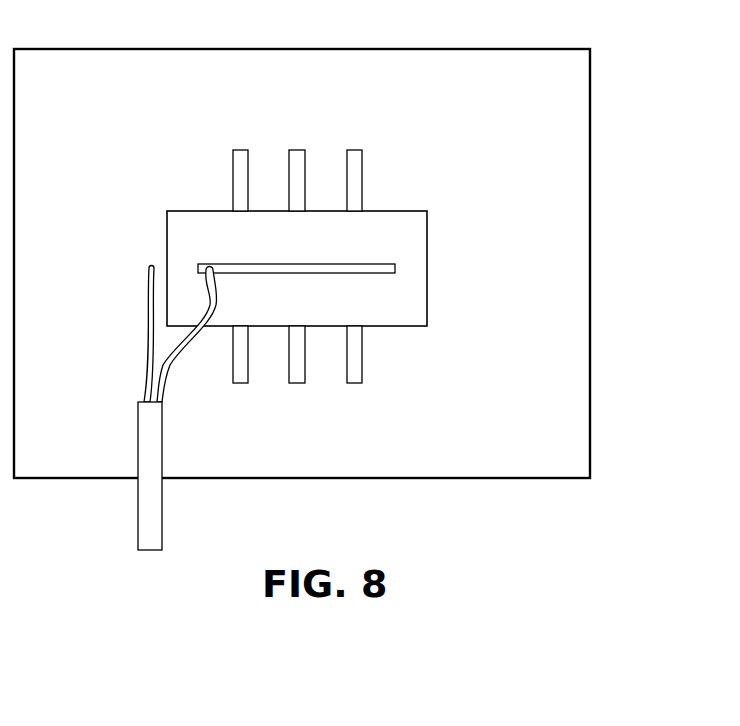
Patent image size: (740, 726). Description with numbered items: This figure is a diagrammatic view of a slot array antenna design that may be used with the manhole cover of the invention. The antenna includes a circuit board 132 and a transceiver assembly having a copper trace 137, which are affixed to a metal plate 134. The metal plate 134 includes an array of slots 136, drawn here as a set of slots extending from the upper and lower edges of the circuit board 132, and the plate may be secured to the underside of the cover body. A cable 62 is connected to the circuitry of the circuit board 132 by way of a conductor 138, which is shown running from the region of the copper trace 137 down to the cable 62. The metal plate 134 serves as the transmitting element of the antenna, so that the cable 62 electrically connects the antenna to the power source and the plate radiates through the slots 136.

The metal plate 134 is at (590, 116).
The circuit board 132 is at (199, 211).
The slots 136 is at (355, 150).
The copper trace 137 is at (395, 272).
The conductor 138 is at (163, 373).
The cable 62 is at (138, 518).